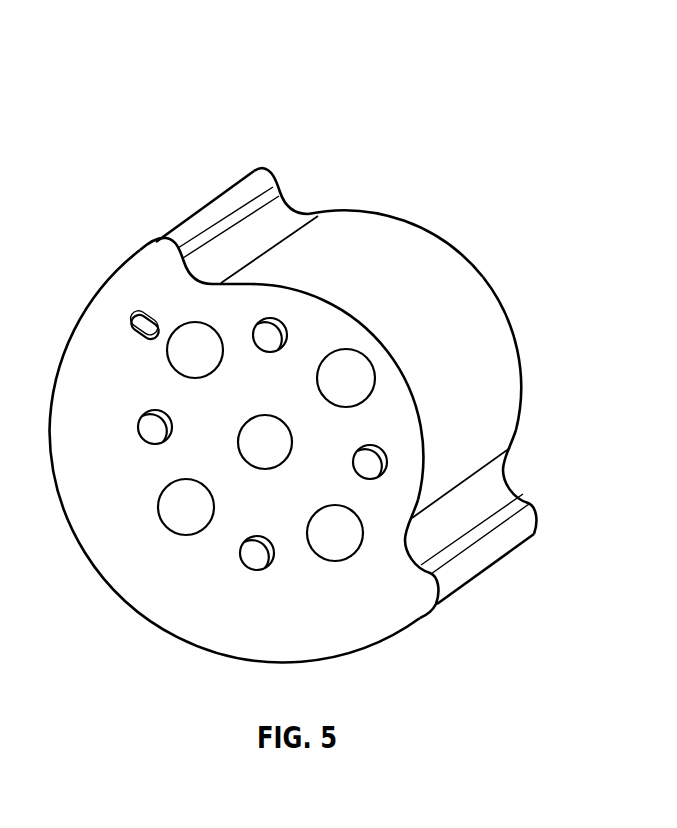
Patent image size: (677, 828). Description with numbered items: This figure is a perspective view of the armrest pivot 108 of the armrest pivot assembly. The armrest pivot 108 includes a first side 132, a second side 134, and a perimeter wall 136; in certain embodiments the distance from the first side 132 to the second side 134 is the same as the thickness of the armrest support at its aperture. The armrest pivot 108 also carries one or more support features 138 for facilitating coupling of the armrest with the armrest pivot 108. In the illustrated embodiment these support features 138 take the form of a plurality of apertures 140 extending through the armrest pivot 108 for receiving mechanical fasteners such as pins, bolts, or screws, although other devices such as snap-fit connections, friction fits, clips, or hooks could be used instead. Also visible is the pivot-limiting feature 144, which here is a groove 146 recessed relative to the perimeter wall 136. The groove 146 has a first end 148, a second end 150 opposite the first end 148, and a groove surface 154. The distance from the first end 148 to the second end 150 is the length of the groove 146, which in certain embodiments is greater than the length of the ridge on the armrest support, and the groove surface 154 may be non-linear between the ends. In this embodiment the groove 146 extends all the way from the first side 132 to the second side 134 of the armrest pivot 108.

The armrest pivot 108 is at (165, 165).
The first side 132 is at (100, 320).
The second side 134 is at (483, 278).
The perimeter wall 136 is at (188, 207).
The support features 138 is at (177, 330).
The apertures 140 is at (352, 373).
The pivot-limiting feature 144 is at (422, 257).
The groove 146 is at (480, 340).
The first end 148 is at (262, 224).
The second end 150 is at (493, 477).
The groove surface 154 is at (483, 315).